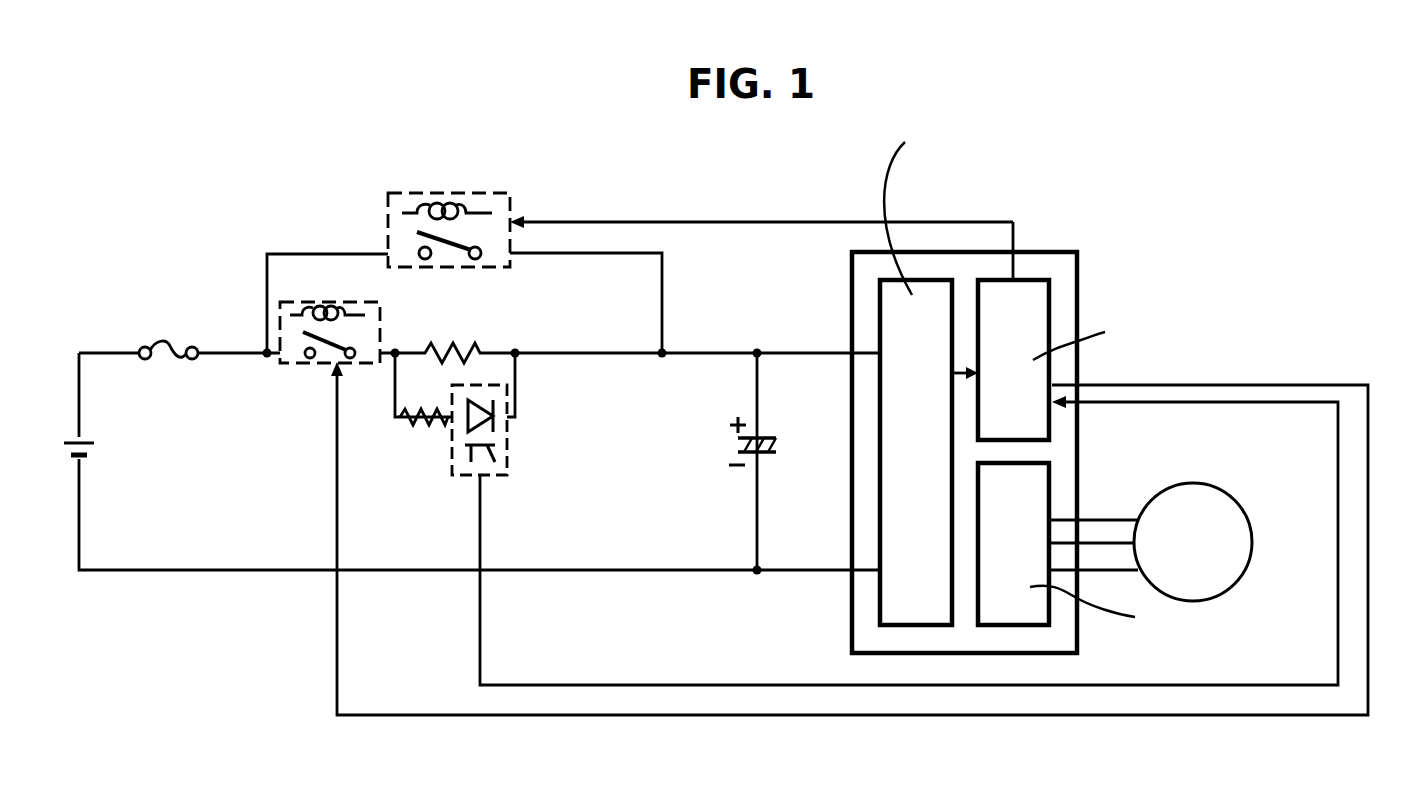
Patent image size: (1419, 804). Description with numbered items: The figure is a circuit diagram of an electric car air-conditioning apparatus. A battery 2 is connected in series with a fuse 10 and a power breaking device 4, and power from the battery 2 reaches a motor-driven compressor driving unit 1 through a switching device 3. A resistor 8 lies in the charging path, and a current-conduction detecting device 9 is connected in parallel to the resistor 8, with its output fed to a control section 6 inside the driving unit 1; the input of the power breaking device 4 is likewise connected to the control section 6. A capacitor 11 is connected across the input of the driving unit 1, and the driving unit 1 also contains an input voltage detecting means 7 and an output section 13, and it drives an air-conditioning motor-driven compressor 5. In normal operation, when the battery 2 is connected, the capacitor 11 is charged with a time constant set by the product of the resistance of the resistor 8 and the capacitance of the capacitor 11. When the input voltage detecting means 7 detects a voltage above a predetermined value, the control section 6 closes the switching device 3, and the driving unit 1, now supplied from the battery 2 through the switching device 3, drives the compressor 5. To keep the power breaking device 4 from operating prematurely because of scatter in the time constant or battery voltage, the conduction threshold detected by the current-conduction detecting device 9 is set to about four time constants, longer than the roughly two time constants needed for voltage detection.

The motor-driven compressor driving unit 1 is at (1050, 252).
The battery 2 is at (90, 442).
The switching device 3 is at (448, 193).
The power breaking device 4 is at (310, 302).
The air-conditioning motor-driven compressor 5 is at (1201, 483).
The control section 6 is at (1049, 302).
The input voltage detecting means 7 is at (879, 302).
The resistor 8 is at (452, 346).
The current-conduction detecting device 9 is at (424, 422).
The fuse 10 is at (172, 346).
The capacitor 11 is at (772, 437).
The output section 13 is at (1049, 468).